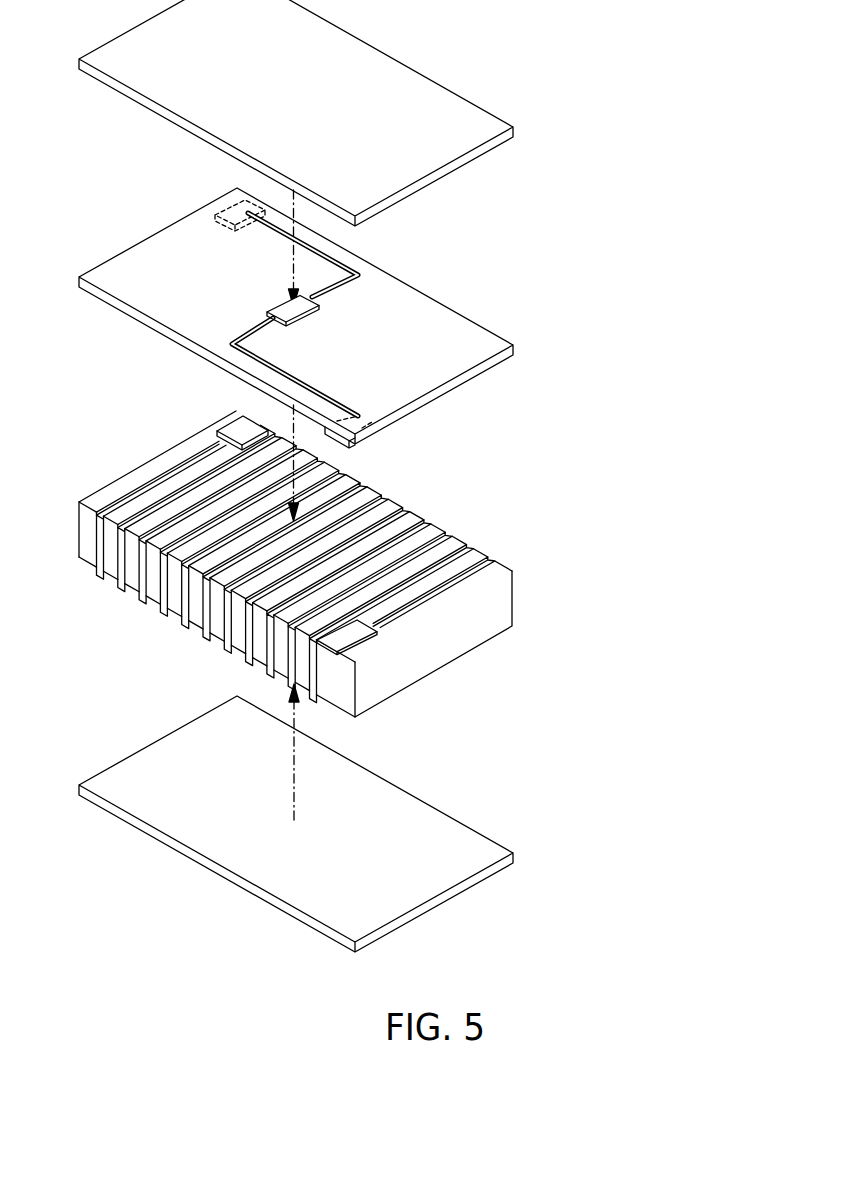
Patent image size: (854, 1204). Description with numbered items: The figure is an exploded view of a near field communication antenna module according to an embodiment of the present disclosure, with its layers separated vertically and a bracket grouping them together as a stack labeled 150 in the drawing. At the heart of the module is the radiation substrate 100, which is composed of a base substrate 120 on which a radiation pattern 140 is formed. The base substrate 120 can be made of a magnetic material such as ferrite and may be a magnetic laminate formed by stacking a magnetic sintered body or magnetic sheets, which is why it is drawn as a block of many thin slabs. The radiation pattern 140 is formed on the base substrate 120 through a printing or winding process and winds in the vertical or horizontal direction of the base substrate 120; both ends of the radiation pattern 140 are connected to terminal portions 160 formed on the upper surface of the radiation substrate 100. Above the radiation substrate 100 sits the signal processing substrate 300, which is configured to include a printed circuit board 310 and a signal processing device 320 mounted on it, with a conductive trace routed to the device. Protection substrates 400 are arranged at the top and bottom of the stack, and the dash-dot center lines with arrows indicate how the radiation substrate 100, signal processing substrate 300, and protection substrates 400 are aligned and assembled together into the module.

The radiation substrate 100 is at (390, 564).
The base substrate 120 is at (512, 598).
The radiation pattern 140 is at (494, 557).
The battery module 150 is at (435, 476).
The terminal portion 160 is at (421, 542).
The signal processing substrate 300 is at (390, 318).
The printed circuit board 310 is at (513, 345).
The signal processing device 320 is at (327, 292).
The protection substrate 400 is at (512, 128).